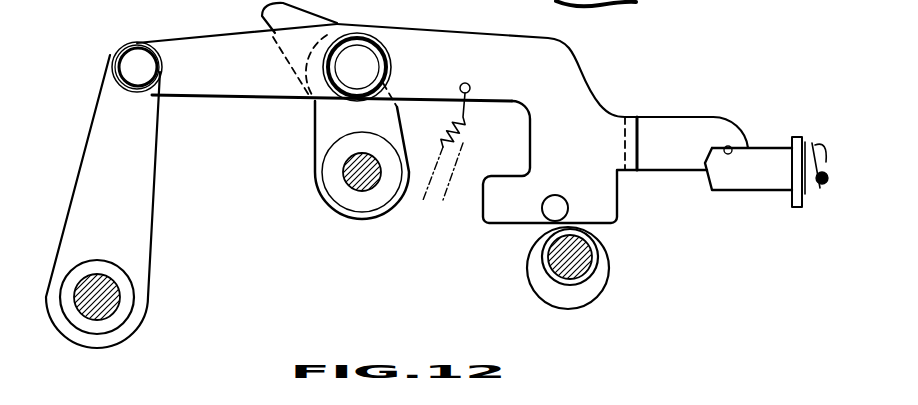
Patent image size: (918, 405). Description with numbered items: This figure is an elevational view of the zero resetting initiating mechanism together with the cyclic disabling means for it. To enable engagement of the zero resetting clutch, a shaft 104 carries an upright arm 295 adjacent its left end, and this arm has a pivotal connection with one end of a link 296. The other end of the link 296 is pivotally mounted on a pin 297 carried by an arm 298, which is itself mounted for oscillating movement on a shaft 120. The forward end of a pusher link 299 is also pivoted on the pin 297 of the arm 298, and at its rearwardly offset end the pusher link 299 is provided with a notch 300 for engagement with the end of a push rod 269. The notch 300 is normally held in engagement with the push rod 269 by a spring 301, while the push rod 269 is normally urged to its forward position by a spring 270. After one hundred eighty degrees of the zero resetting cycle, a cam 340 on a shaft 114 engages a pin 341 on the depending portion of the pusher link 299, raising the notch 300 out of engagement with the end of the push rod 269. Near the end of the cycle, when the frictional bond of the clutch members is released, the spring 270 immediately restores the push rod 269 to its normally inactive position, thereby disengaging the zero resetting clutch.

The shaft 104 is at (110, 297).
The shaft 114 is at (580, 251).
The shaft 120 is at (370, 183).
The push rod 269 is at (763, 153).
The spring 270 is at (815, 194).
The upright arm 295 is at (150, 182).
The link 296 is at (217, 46).
The pin 297 is at (363, 48).
The arm 298 is at (318, 125).
The pusher link 299 is at (474, 38).
The notch 300 is at (727, 146).
The spring 301 is at (455, 136).
The cam 340 is at (600, 277).
The pin 341 is at (557, 203).